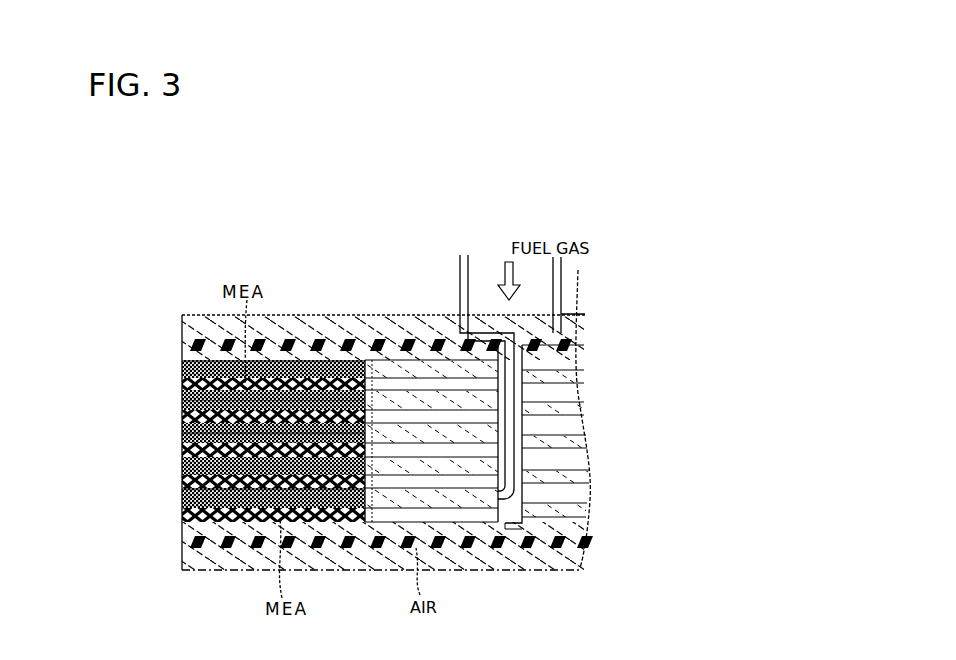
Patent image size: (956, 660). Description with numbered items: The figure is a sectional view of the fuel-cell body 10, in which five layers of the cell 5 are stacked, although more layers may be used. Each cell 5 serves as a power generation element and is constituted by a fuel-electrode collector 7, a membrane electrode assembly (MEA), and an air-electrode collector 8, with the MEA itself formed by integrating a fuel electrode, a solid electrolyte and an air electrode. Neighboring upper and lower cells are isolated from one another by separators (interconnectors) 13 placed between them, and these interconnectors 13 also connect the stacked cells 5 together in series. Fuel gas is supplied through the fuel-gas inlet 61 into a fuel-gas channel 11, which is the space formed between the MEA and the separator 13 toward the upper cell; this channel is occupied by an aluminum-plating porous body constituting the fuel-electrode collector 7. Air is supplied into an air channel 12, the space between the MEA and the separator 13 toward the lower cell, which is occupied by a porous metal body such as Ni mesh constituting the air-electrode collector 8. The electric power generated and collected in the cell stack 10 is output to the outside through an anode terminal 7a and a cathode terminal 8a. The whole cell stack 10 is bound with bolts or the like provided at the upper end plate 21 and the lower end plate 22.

The cell 5 is at (176, 428).
The fuel-electrode collector 7 is at (222, 368).
The anode terminal 7a is at (584, 362).
The air-electrode collector 8 is at (256, 395).
The cathode terminal 8a is at (585, 523).
The fuel-cell body 10 is at (634, 426).
The fuel-gas channel 11 is at (179, 367).
The air channel 12 is at (179, 384).
The separator (interconnector) 13 is at (181, 393).
The upper end plate 21 is at (421, 326).
The lower end plate 22 is at (489, 562).
The fuel-gas inlet 61 is at (470, 258).